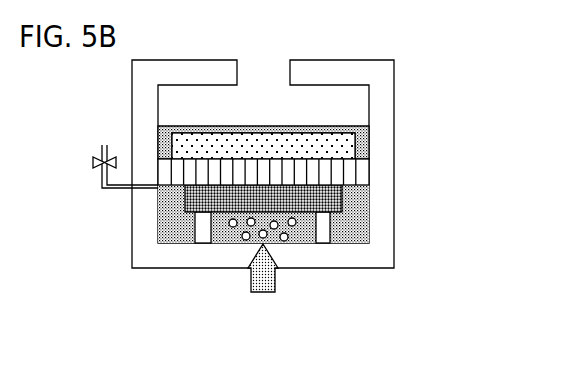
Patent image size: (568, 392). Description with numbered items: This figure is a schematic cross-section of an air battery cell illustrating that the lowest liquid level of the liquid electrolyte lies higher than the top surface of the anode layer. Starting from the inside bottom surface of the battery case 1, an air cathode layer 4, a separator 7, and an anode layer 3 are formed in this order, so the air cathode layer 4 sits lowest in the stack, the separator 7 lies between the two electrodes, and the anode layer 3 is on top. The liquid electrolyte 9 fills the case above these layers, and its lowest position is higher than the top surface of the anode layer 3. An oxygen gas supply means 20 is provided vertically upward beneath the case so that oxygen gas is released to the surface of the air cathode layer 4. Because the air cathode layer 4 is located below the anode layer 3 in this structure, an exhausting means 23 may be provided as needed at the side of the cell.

The battery case 1 is at (375, 228).
The anode layer 3 is at (345, 149).
The air cathode layer 4 is at (367, 197).
The separator 7 is at (362, 172).
The liquid electrolyte 9 is at (365, 128).
The oxygen gas supply means 20 is at (265, 282).
The exhausting means 23 is at (112, 192).